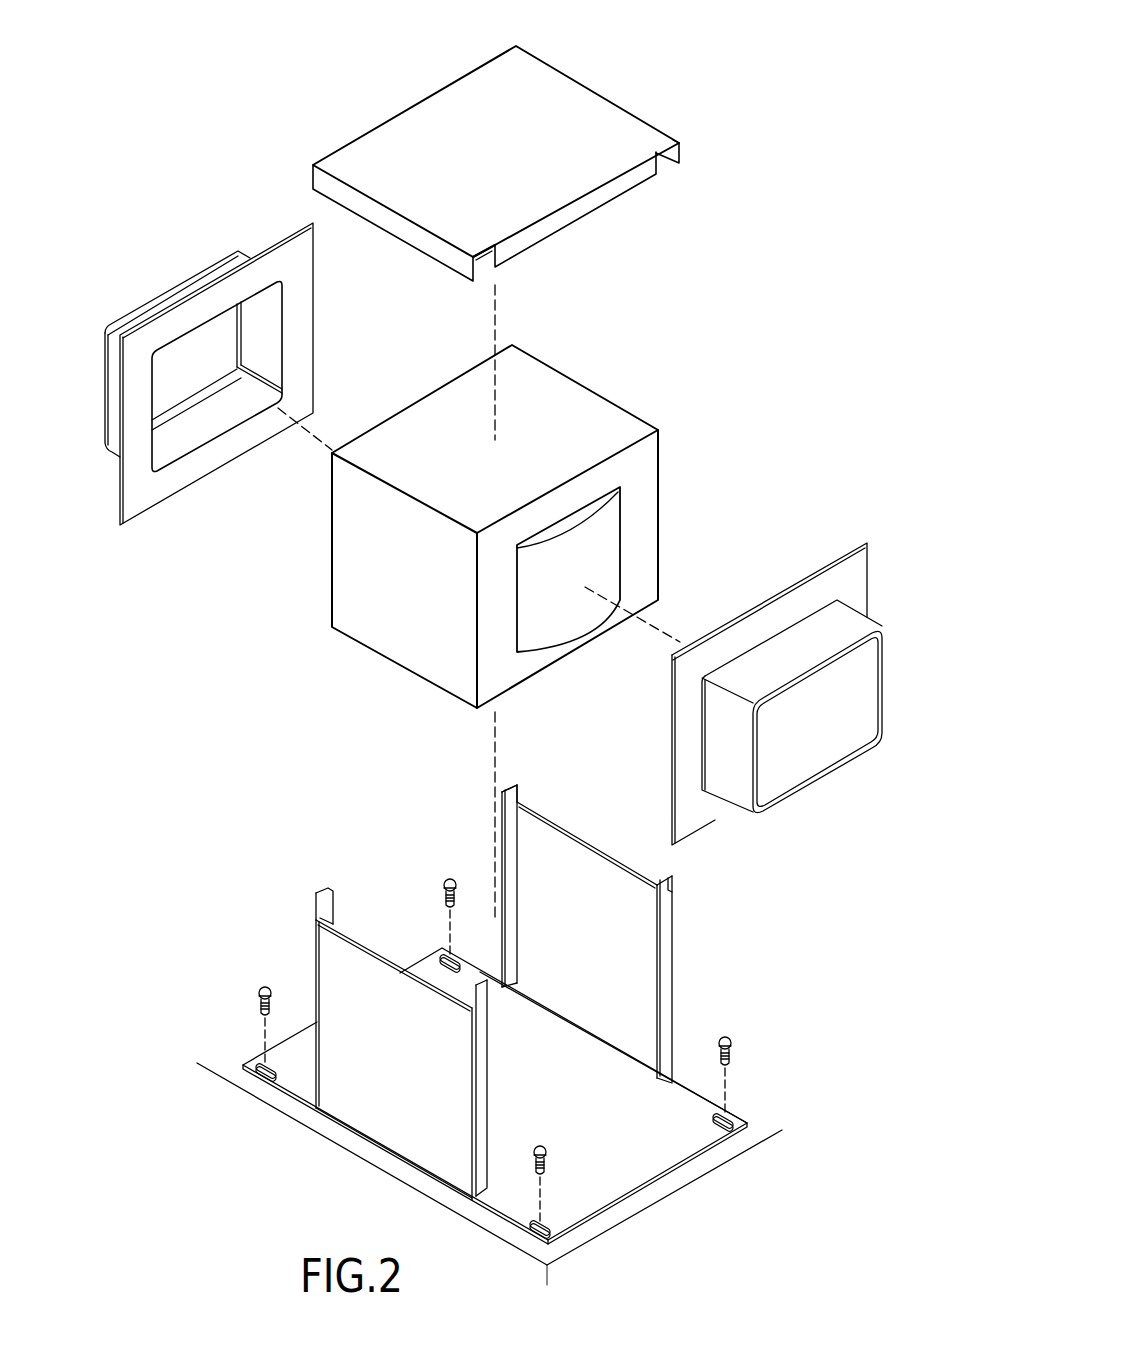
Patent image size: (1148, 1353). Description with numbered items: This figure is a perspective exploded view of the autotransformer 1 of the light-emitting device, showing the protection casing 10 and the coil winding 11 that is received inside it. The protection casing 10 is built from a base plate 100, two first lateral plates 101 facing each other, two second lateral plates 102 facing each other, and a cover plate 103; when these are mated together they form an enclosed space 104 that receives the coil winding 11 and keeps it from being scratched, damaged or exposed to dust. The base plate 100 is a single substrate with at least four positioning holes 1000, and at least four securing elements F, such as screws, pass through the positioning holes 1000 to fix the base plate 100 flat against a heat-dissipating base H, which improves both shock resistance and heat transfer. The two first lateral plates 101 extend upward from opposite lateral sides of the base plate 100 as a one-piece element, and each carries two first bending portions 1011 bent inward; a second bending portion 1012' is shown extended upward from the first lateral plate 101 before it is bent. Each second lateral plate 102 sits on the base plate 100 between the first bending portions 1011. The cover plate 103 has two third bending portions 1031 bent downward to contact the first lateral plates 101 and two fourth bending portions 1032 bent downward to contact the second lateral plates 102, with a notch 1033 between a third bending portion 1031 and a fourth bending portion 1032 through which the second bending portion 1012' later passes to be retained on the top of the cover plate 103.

The autotransformer 1 is at (852, 45).
The protection casing 10 is at (593, 526).
The coil winding 11 is at (606, 548).
The base plate 100 is at (536, 1098).
The positioning holes 1000 is at (734, 1122).
The first lateral plates 101 is at (475, 985).
The first bending portions 1011 is at (510, 877).
The second bending portion 1012' is at (464, 885).
The second lateral plates 102 is at (187, 313).
The cover plate 103 is at (539, 198).
The third bending portions 1031 is at (681, 149).
The fourth bending portions 1032 is at (400, 113).
The notch 1033 is at (662, 163).
The enclosed space 104 is at (557, 1053).
The securing elements F is at (739, 1031).
The heat-dissipating base H is at (614, 1221).